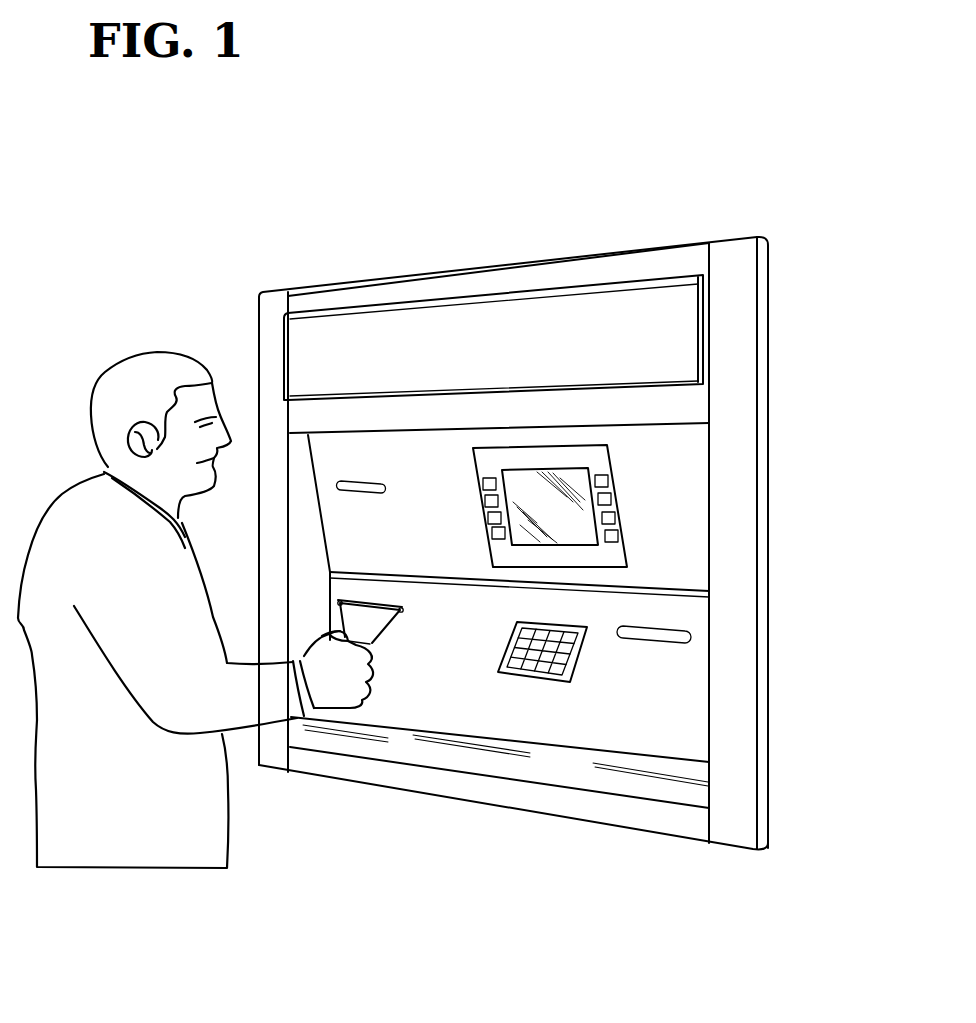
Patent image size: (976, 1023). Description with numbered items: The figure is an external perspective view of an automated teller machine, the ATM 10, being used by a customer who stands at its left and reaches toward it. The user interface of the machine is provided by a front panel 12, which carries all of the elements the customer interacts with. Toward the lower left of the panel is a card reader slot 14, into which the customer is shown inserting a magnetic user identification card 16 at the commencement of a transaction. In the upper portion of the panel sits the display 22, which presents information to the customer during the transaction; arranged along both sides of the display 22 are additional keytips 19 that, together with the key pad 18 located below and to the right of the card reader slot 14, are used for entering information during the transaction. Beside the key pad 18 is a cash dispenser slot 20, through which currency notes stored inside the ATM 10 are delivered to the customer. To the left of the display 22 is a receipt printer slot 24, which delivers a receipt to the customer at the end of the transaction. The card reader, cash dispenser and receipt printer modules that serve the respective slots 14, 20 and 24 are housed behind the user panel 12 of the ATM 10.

The ATM 10 is at (628, 211).
The front panel 12 is at (663, 548).
The card reader slot 14 is at (407, 611).
The magnetic user identification card 16 is at (372, 628).
The key pad 18 is at (530, 666).
The keytips 19 is at (605, 500).
The cash dispenser slot 20 is at (650, 634).
The display 22 is at (513, 478).
The receipt printer slot 24 is at (362, 489).